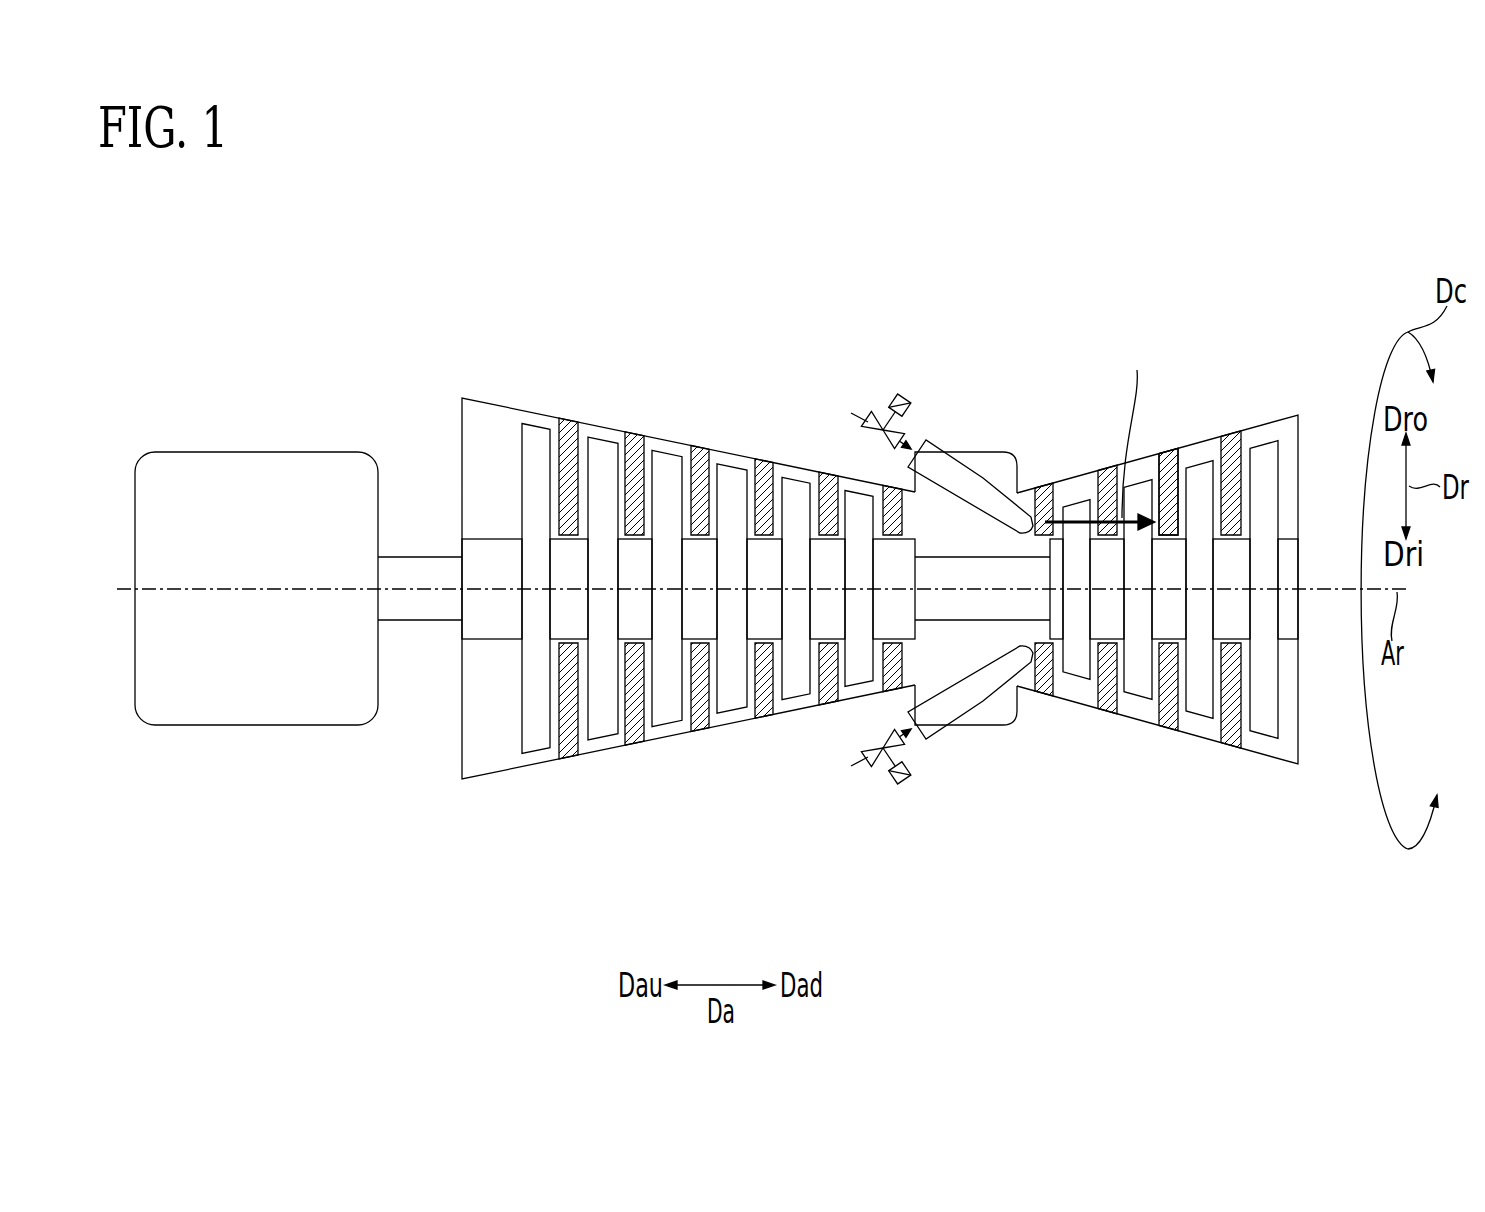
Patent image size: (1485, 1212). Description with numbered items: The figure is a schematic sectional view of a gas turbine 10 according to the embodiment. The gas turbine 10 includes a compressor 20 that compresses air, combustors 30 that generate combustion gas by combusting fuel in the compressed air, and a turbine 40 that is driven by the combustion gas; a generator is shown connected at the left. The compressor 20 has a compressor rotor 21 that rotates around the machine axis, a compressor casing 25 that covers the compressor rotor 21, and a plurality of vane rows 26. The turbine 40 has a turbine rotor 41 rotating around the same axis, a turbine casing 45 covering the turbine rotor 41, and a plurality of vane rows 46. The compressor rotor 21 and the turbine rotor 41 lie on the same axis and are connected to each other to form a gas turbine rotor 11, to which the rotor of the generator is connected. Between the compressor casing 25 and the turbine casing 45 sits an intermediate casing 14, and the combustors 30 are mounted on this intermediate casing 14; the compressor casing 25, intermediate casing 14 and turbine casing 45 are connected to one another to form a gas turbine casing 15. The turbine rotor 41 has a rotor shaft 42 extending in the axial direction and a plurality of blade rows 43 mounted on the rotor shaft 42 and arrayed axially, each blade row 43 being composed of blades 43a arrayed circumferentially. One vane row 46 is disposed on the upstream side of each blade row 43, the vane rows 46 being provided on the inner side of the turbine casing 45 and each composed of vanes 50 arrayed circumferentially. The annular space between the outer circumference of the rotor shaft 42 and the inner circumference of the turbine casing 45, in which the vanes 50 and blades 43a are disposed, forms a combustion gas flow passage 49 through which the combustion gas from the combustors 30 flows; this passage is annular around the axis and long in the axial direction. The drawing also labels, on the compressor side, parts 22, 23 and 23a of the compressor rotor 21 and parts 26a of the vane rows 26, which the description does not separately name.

The gas turbine 10 is at (403, 323).
The gas turbine rotor 11 is at (968, 622).
The intermediate casing 14 is at (980, 452).
The gas turbine casing 15 is at (977, 723).
The compressor 20 is at (733, 418).
The compressor rotor 21 is at (783, 852).
The compressor rotor shaft 22 is at (624, 613).
The compressor rotor blade row 23 is at (534, 737).
The compressor rotor blade 23a is at (536, 589).
The compressor casing 25 is at (672, 441).
The vane row 26 is at (630, 420).
The compressor stator vane 26a is at (568, 476).
The combustor 30 is at (945, 447).
The turbine 40 is at (1255, 413).
The turbine rotor 41 is at (1330, 853).
The rotor shaft 42 is at (1170, 613).
The blade row 43 is at (1138, 677).
The blade 43a is at (1138, 590).
The turbine casing 45 is at (1213, 437).
The vane row 46 is at (1108, 473).
The combustion gas flow passage 49 is at (1181, 505).
The vane 50 is at (1044, 509).